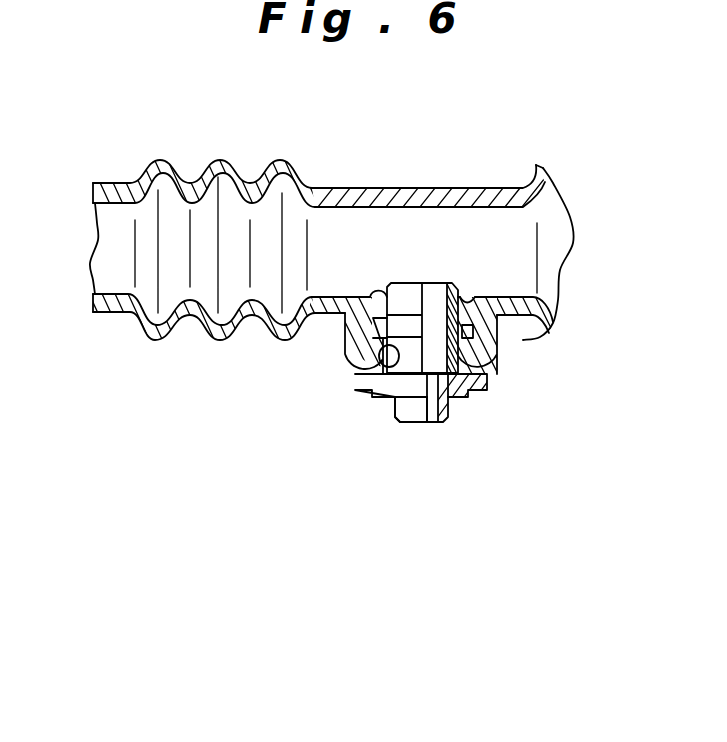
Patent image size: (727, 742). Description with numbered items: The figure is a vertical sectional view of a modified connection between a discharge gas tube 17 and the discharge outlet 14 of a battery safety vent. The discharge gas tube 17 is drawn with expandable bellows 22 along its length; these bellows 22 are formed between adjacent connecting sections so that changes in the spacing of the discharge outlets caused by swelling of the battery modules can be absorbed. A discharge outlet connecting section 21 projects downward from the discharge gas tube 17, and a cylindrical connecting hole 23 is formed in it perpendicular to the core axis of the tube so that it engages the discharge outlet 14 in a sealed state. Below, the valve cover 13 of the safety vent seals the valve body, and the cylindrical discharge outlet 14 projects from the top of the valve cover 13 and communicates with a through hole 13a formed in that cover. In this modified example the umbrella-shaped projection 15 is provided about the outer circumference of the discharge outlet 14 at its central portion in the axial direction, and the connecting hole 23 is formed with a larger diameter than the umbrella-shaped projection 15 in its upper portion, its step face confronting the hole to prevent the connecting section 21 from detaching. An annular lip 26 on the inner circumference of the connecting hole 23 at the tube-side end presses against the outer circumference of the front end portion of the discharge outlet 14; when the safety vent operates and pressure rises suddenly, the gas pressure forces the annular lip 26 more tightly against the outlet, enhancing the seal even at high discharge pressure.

The expandable bellows 22 is at (208, 172).
The discharge gas tube 17 is at (358, 190).
The discharge outlet 14 is at (432, 300).
The annular lip 26 is at (467, 303).
The discharge outlet connecting section 21 is at (348, 336).
The connecting hole 23 is at (385, 352).
The umbrella-shaped projection 15 is at (497, 348).
The valve cover 13 is at (487, 392).
The through hole 13a is at (432, 422).